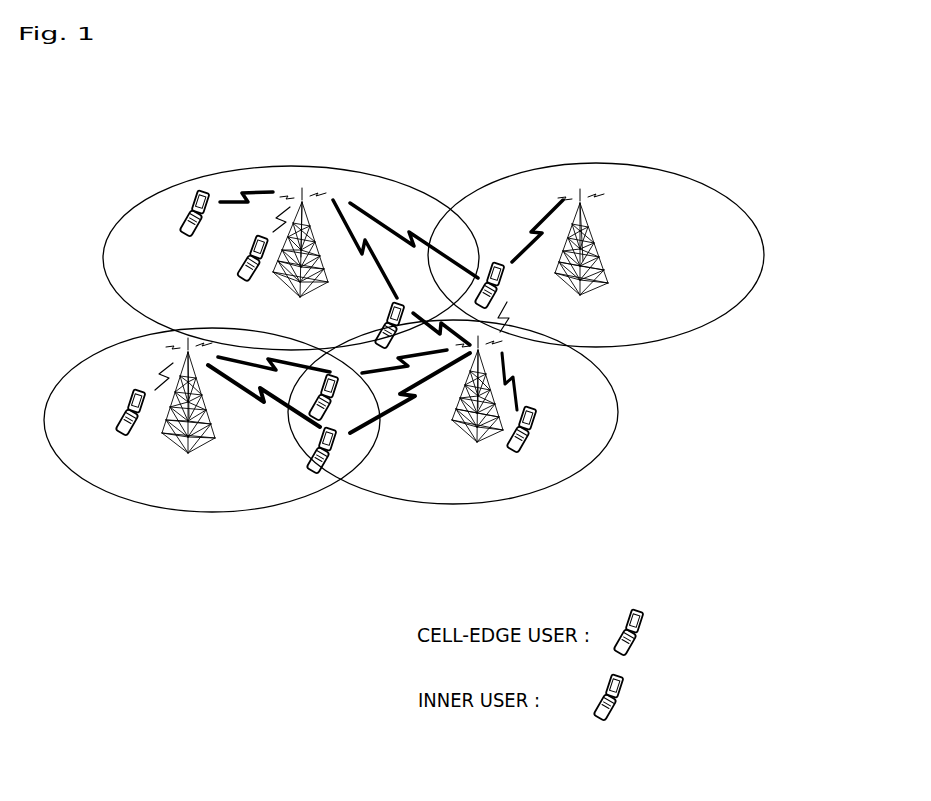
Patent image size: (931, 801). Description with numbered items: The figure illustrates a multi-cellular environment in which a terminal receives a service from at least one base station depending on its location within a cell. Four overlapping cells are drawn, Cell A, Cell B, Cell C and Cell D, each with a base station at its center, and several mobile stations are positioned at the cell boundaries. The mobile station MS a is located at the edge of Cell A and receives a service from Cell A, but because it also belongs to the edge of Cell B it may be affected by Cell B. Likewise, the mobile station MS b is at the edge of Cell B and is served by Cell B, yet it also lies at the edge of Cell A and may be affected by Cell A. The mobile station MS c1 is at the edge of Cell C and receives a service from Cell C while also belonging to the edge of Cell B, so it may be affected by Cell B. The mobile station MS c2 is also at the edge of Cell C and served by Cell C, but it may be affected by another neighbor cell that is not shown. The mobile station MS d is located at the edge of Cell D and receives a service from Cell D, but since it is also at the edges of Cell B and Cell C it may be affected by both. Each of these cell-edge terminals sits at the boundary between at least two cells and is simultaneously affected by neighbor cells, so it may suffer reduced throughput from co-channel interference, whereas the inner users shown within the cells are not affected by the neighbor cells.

The Cell A is at (188, 411).
The Cell B is at (477, 403).
The Cell C is at (300, 257).
The Cell D is at (581, 255).
The mobile station a MS a is at (301, 454).
The mobile station b MS b is at (343, 396).
The mobile station c1 MS c1 is at (365, 326).
The mobile station c2 MS c2 is at (183, 227).
The mobile station d MS d is at (496, 268).